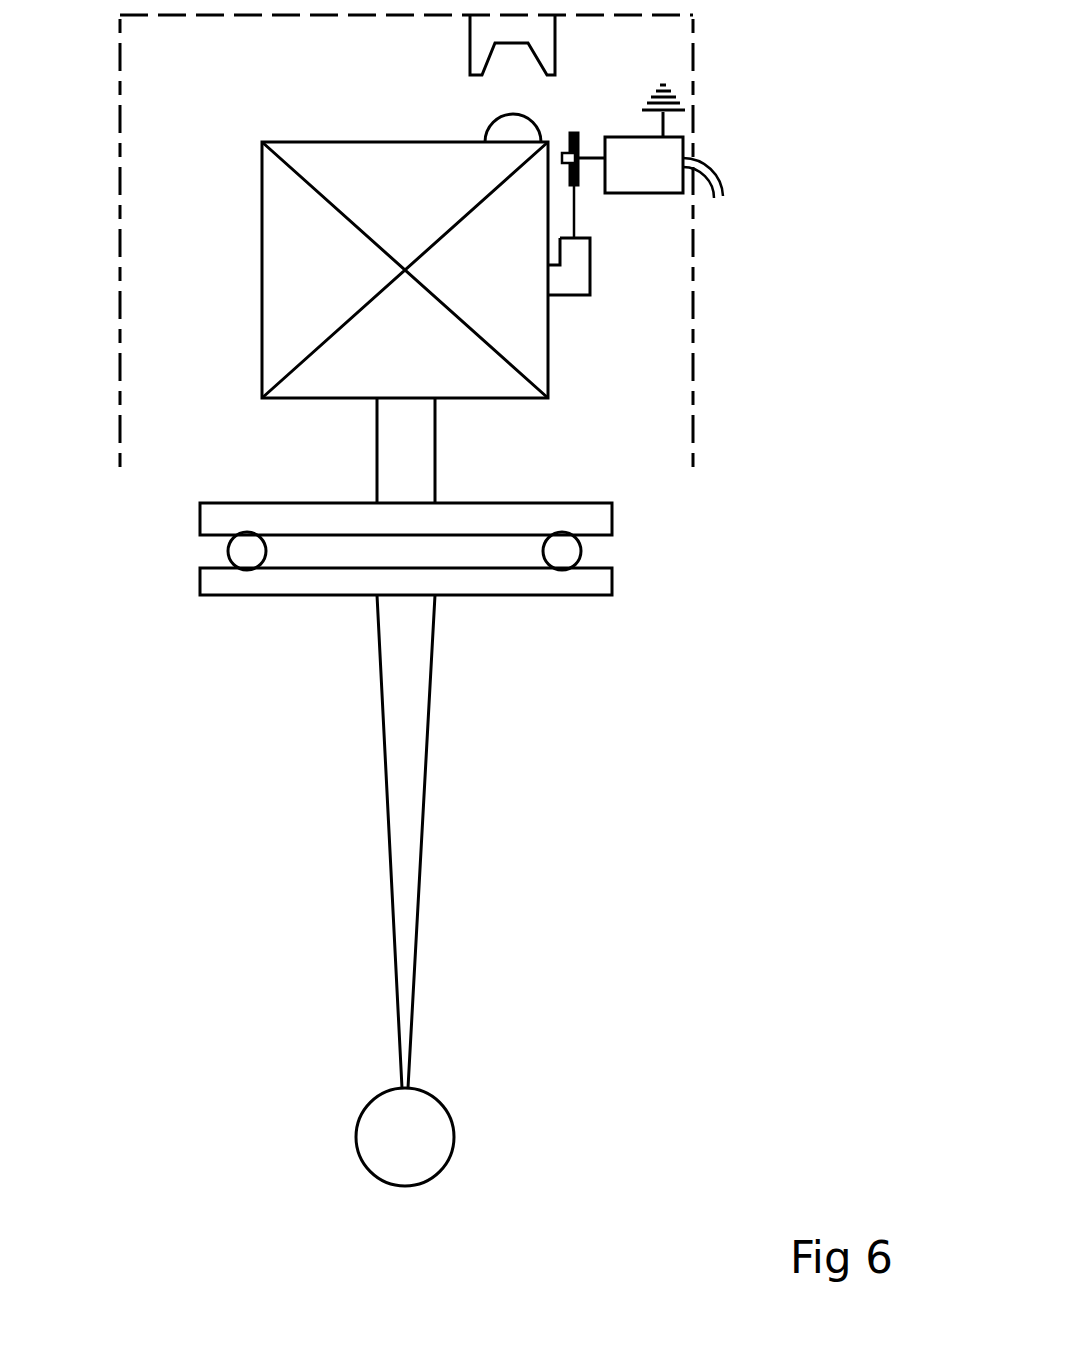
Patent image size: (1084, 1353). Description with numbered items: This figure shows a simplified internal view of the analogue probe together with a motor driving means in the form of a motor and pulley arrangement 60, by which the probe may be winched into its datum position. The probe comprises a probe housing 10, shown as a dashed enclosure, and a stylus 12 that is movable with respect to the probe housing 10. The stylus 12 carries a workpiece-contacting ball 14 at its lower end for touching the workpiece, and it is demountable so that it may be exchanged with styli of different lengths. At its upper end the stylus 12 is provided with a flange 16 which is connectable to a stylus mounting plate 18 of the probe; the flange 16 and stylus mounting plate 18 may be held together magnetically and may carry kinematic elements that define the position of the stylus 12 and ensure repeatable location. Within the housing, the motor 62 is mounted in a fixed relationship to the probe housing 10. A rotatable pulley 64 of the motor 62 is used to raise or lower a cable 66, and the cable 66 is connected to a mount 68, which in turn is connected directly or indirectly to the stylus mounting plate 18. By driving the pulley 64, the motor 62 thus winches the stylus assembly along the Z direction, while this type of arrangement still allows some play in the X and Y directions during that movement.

The probe housing 10 is at (693, 373).
The stylus 12 is at (413, 733).
The workpiece-contacting ball 14 is at (427, 1112).
The flange 16 is at (243, 580).
The stylus mounting plate 18 is at (217, 537).
The motor and pulley arrangement 60 is at (719, 209).
The motor 62 is at (662, 182).
The rotatable pulley 64 is at (567, 137).
The cable 66 is at (578, 208).
The mount 68 is at (582, 283).